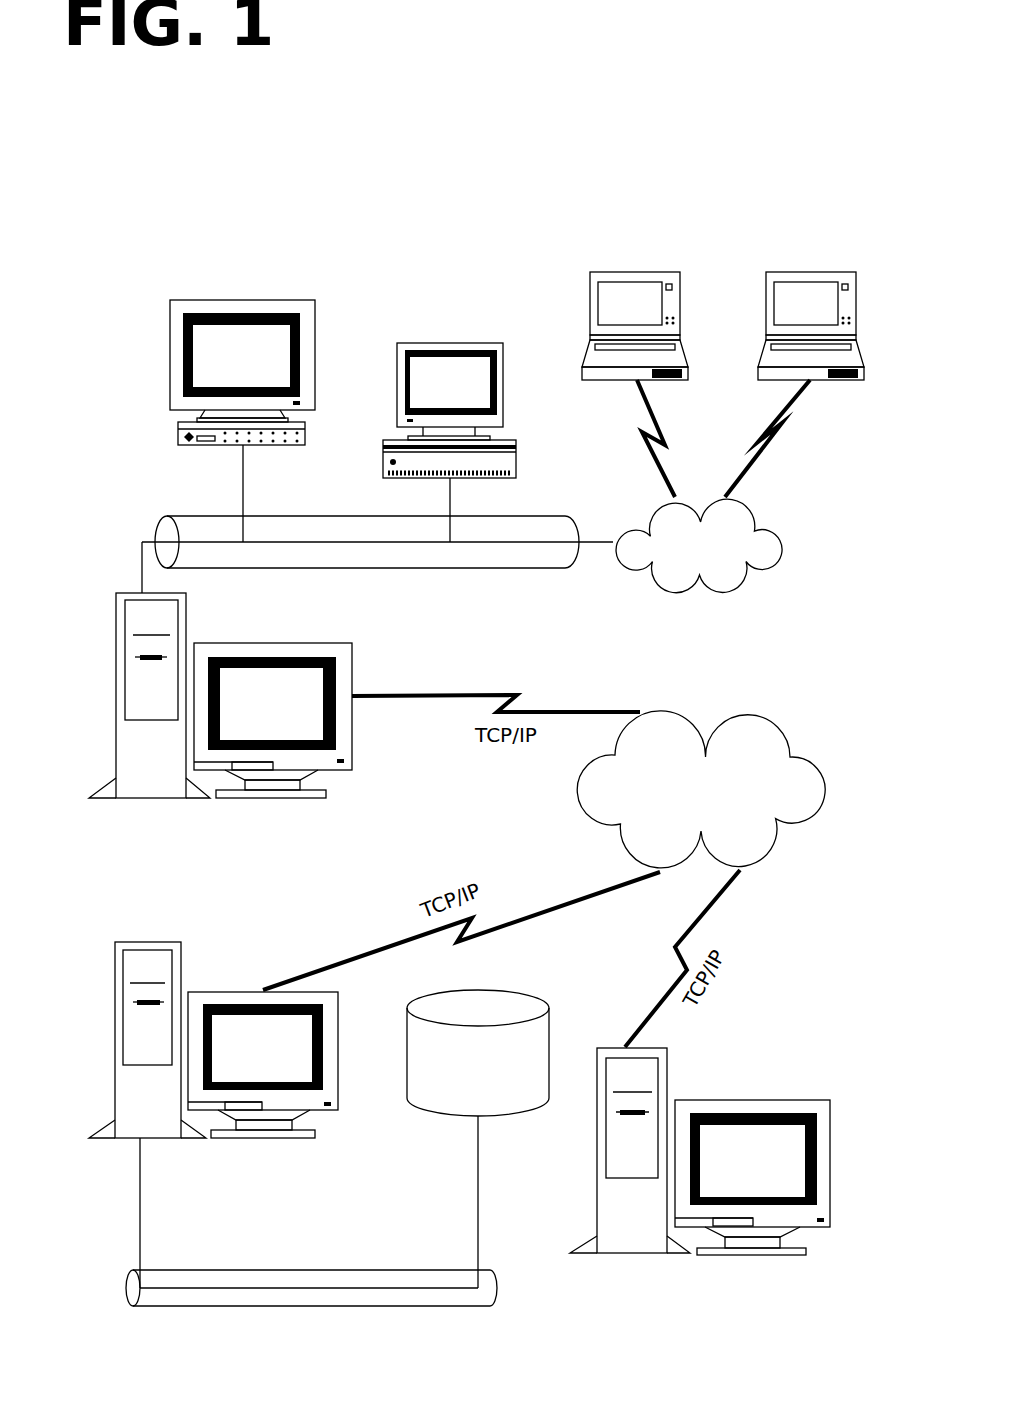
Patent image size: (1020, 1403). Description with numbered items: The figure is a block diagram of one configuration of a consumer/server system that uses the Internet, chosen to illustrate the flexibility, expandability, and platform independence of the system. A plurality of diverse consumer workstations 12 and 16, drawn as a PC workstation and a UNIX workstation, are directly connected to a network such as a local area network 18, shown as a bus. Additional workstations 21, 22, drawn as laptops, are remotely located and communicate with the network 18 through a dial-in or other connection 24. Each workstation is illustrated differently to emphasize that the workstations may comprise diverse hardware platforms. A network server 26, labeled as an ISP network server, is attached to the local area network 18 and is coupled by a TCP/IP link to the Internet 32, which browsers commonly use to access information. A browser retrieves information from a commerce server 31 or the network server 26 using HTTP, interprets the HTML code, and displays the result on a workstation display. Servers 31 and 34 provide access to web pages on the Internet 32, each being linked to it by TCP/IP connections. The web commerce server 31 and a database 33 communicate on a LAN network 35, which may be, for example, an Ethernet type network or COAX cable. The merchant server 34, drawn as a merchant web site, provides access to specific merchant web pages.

The consumer workstation 12 is at (170, 372).
The consumer workstation 16 is at (515, 445).
The local area network 18 is at (402, 563).
The workstation 21 is at (680, 327).
The workstation 22 is at (767, 327).
The dial-in connection 24 is at (675, 595).
The network server 26 is at (205, 626).
The commerce server 31 is at (212, 992).
The Internet 32 is at (738, 712).
The database 33 is at (503, 1114).
The merchant server 34 is at (751, 1099).
The LAN network 35 is at (425, 1270).